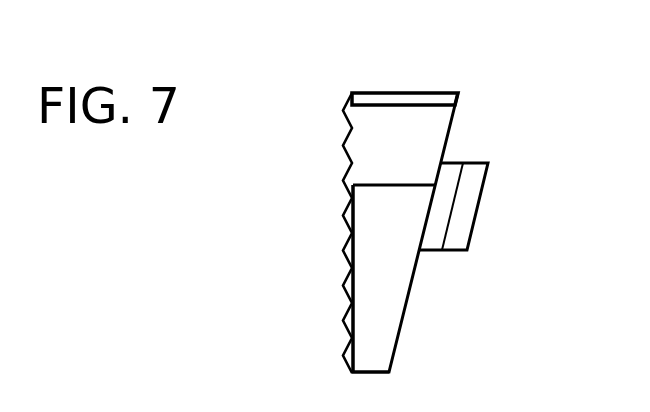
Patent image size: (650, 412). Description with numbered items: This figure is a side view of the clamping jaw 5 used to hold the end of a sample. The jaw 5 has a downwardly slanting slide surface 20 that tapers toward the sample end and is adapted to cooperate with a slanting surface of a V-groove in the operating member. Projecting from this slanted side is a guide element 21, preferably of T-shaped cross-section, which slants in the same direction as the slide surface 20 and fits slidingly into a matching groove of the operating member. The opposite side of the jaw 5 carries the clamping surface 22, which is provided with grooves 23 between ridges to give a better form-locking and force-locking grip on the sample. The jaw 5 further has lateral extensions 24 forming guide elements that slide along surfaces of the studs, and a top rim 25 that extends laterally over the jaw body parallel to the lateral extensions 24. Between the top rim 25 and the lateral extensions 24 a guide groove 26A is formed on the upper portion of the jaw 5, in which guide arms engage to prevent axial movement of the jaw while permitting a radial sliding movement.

The clamping jaw 5 is at (313, 106).
The slide surface 20 is at (454, 130).
The guide element 21 is at (468, 188).
The clamping surface 22 is at (348, 232).
The grooves 23 is at (341, 290).
The lateral extensions 24 is at (395, 283).
The top rim 25 is at (392, 98).
The guide groove 26A is at (372, 156).